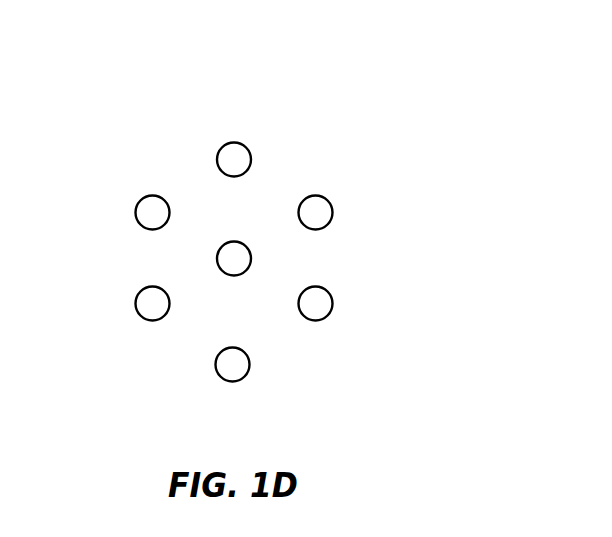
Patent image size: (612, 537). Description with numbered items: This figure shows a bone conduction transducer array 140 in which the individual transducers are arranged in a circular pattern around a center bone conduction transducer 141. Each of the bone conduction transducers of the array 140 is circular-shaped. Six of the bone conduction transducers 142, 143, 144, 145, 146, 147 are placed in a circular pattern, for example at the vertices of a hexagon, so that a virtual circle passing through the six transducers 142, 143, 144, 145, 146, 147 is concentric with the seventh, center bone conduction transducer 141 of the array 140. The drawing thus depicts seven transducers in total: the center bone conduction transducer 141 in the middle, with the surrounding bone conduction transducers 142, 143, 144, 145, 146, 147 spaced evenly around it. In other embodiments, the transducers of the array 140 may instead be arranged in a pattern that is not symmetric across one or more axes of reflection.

The bone conduction transducer array 140 is at (247, 21).
The center bone conduction transducer 141 is at (227, 242).
The bone conduction transducer 142 is at (226, 143).
The bone conduction transducer 143 is at (320, 196).
The bone conduction transducer 144 is at (326, 289).
The bone conduction transducer 145 is at (247, 373).
The bone conduction transducer 146 is at (143, 289).
The bone conduction transducer 147 is at (145, 197).